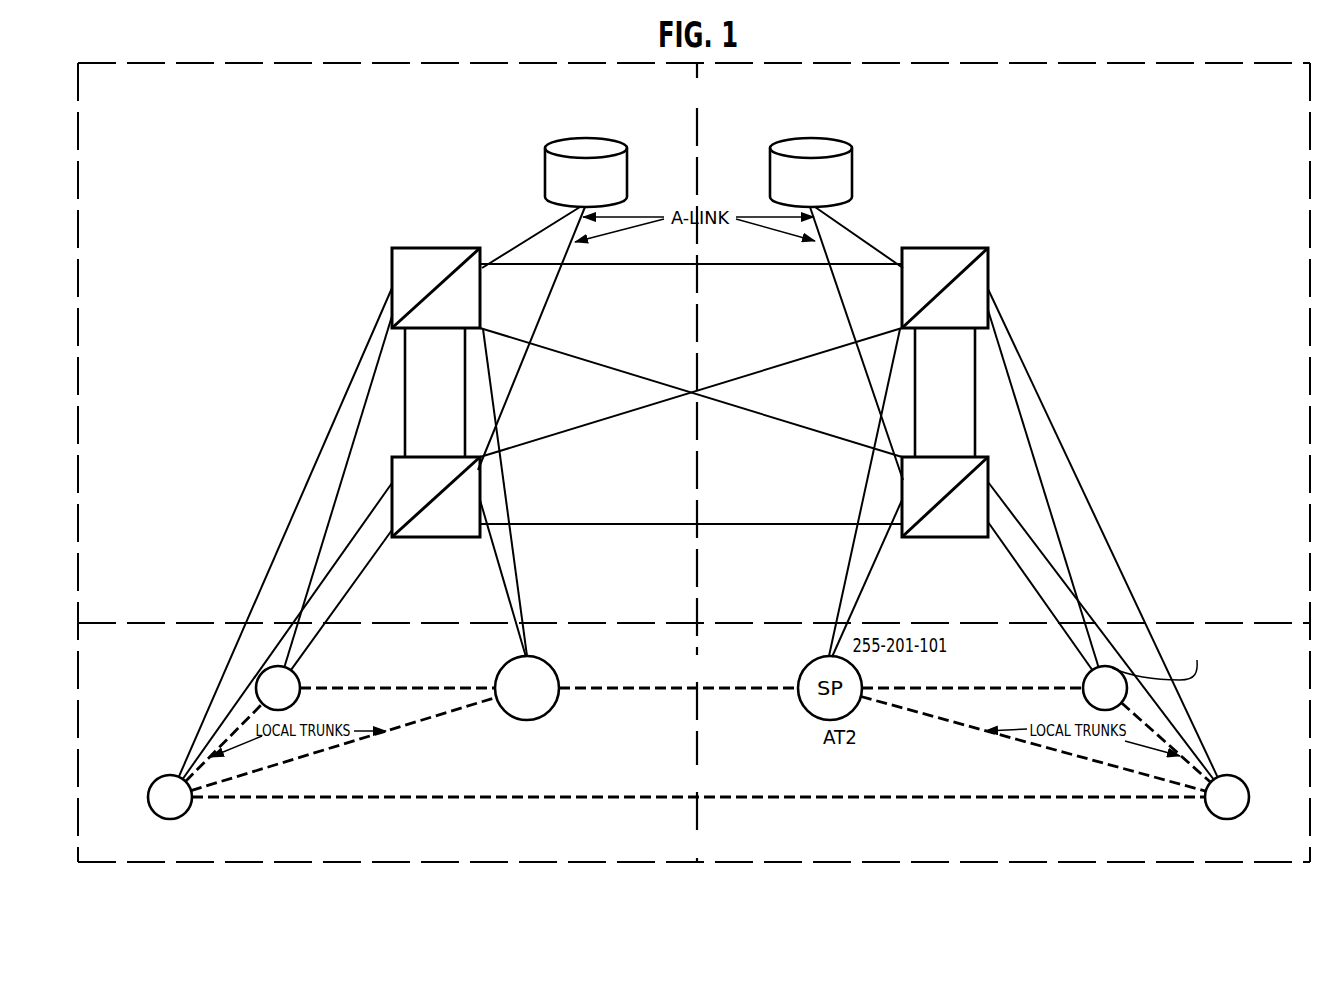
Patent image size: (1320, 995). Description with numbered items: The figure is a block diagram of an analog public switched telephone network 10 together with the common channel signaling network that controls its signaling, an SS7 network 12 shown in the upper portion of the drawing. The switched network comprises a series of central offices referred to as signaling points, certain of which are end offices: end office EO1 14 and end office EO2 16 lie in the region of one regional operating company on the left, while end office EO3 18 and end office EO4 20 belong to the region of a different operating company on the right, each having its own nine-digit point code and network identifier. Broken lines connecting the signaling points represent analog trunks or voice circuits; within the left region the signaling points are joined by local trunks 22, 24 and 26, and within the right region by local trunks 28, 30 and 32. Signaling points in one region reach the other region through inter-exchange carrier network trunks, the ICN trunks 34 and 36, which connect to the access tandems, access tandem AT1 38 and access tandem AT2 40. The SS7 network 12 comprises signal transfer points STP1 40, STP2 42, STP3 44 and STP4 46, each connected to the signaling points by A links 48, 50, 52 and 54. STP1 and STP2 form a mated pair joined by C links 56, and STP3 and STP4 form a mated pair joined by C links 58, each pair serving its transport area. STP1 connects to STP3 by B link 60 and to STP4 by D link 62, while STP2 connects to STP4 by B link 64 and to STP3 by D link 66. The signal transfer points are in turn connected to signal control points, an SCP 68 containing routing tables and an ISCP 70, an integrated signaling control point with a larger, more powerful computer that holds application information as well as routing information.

The analog switched telephone network 10 is at (945, 860).
The SS7 network 12 is at (160, 62).
The end office EO1 14 is at (262, 672).
The end office EO2 16 is at (148, 791).
The end office EO3 18 is at (1118, 672).
The end office EO4 20 is at (1249, 797).
The local trunk 22 is at (322, 692).
The local trunk 24 is at (343, 745).
The local trunk 26 is at (232, 733).
The local trunk 28 is at (950, 726).
The local trunk 30 is at (1063, 692).
The local trunk 32 is at (1157, 725).
The ICN trunk 34 is at (720, 690).
The ICN trunk 36 is at (561, 794).
The access tandem AT1 38 is at (552, 709).
The signal transfer point STP1 40 is at (392, 270).
The signal transfer point STP2 42 is at (391, 469).
The signal transfer point STP3 44 is at (988, 270).
The signal transfer point STP4 46 is at (989, 469).
The A links 48 is at (354, 577).
The A links 50 is at (512, 545).
The A links 52 is at (1011, 555).
The A links 54 is at (849, 568).
The C links 56 is at (465, 342).
The C links 58 is at (915, 342).
The B link 60 is at (590, 267).
The D link 62 is at (791, 424).
The B link 64 is at (610, 523).
The D link 66 is at (791, 360).
The SCP 68 is at (553, 185).
The ISCP 70 is at (843, 185).